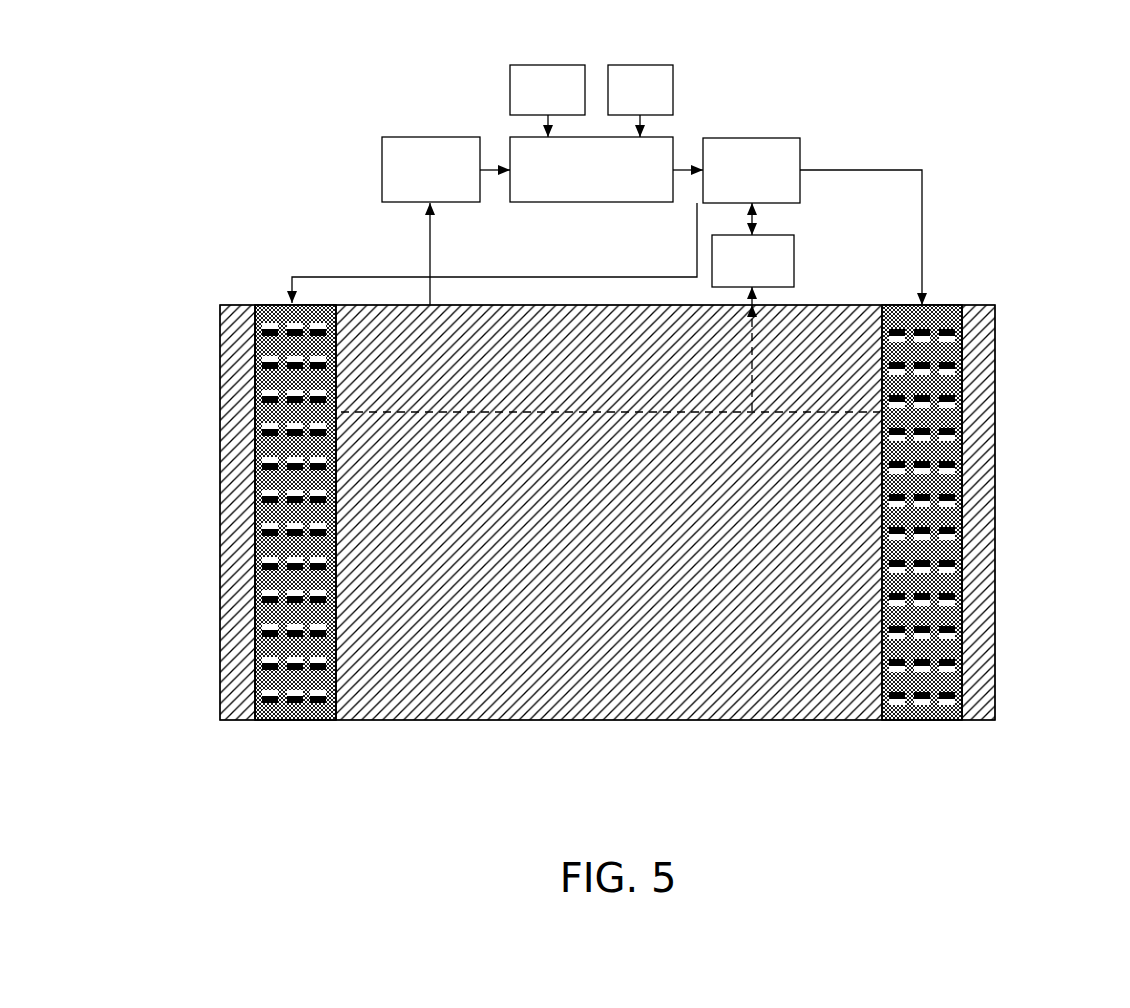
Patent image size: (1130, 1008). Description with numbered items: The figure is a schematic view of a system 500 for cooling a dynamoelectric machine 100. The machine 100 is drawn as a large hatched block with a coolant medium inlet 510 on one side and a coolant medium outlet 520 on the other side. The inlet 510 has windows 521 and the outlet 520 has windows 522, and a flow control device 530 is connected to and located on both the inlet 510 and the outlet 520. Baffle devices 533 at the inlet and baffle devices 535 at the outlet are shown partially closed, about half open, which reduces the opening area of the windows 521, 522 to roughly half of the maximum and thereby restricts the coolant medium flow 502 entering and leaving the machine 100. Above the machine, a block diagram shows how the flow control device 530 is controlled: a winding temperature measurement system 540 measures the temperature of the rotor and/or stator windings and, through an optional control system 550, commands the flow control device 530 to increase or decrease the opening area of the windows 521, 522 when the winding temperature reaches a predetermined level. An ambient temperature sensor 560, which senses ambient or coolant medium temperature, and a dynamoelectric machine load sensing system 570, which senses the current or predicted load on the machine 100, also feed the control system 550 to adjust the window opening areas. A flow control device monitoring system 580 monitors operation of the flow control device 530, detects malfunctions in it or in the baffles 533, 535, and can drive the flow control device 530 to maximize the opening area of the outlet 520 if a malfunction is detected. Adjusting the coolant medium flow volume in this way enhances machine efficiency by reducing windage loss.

The dynamoelectric machine 100 is at (620, 722).
The system 500 is at (245, 110).
The coolant medium flow 502 is at (382, 250).
The coolant medium inlet 510 is at (252, 487).
The coolant medium outlet 520 is at (966, 527).
The windows 521 is at (252, 352).
The windows 522 is at (966, 386).
The flow control device 530 is at (727, 185).
The baffle device 533 is at (268, 692).
The baffle device 535 is at (955, 652).
The winding temperature measurement system 540 is at (406, 185).
The control system 550 is at (566, 185).
The ambient temperature sensor 560 is at (615, 105).
The dynamoelectric machine load sensing system 570 is at (523, 105).
The flow control device monitoring system 580 is at (728, 275).